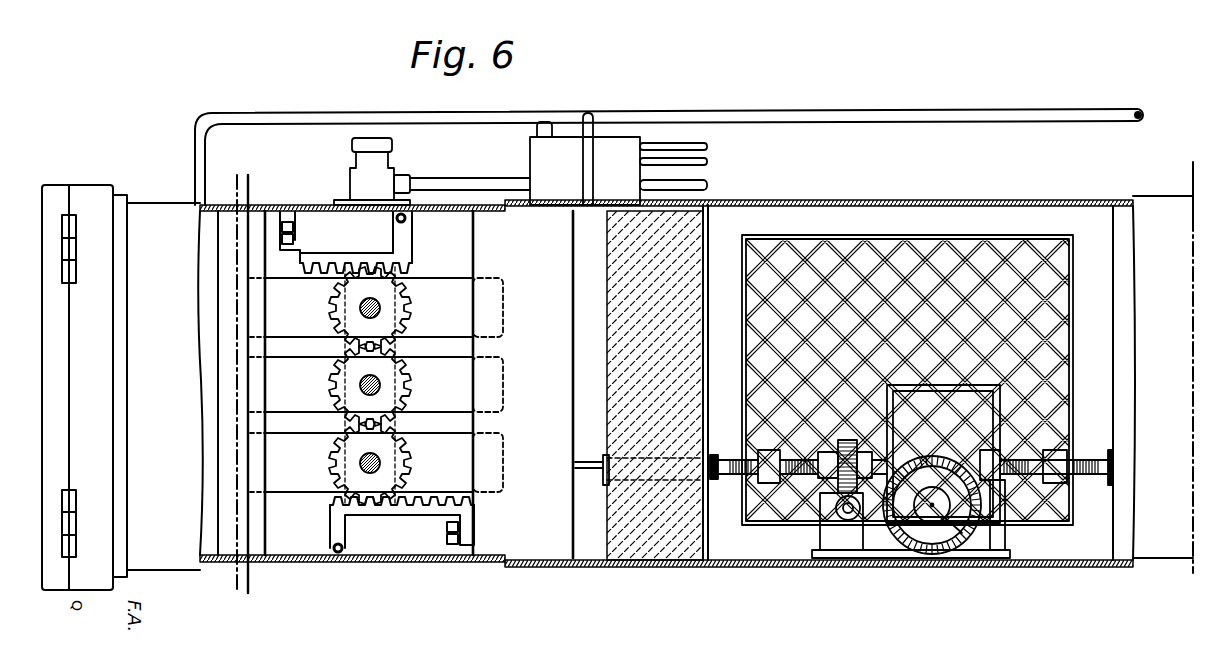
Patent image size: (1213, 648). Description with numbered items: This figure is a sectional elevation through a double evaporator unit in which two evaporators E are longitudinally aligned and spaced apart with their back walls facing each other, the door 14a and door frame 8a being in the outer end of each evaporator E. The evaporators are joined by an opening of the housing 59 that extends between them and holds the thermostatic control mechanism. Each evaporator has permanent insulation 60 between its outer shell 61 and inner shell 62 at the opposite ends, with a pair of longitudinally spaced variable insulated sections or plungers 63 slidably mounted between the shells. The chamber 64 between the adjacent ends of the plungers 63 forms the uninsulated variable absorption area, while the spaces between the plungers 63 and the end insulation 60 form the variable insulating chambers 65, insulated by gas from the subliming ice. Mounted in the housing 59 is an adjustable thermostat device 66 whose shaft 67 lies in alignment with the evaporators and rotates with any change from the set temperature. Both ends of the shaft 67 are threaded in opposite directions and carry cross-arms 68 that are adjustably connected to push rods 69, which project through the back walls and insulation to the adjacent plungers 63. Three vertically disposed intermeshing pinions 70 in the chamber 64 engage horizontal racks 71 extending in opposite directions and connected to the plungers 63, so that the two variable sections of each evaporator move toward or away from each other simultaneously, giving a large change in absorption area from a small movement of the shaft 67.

The door 14a is at (50, 193).
The door frame 8a is at (93, 210).
The housing 59 is at (757, 568).
The permanent insulation 60 is at (655, 540).
The outer shell 61 is at (300, 566).
The inner shell 62 is at (289, 426).
The variable insulated sections or plungers 63 is at (258, 527).
The chamber 64 is at (380, 546).
The variable insulating chambers 65 is at (210, 396).
The adjustable thermostat device 66 is at (938, 442).
The shaft 67 is at (830, 470).
The cross-arms 68 is at (744, 438).
The push rods 69 is at (590, 470).
The intermeshing pinions 70 is at (436, 375).
The horizontal racks 71 is at (330, 262).
The evaporator E is at (160, 550).